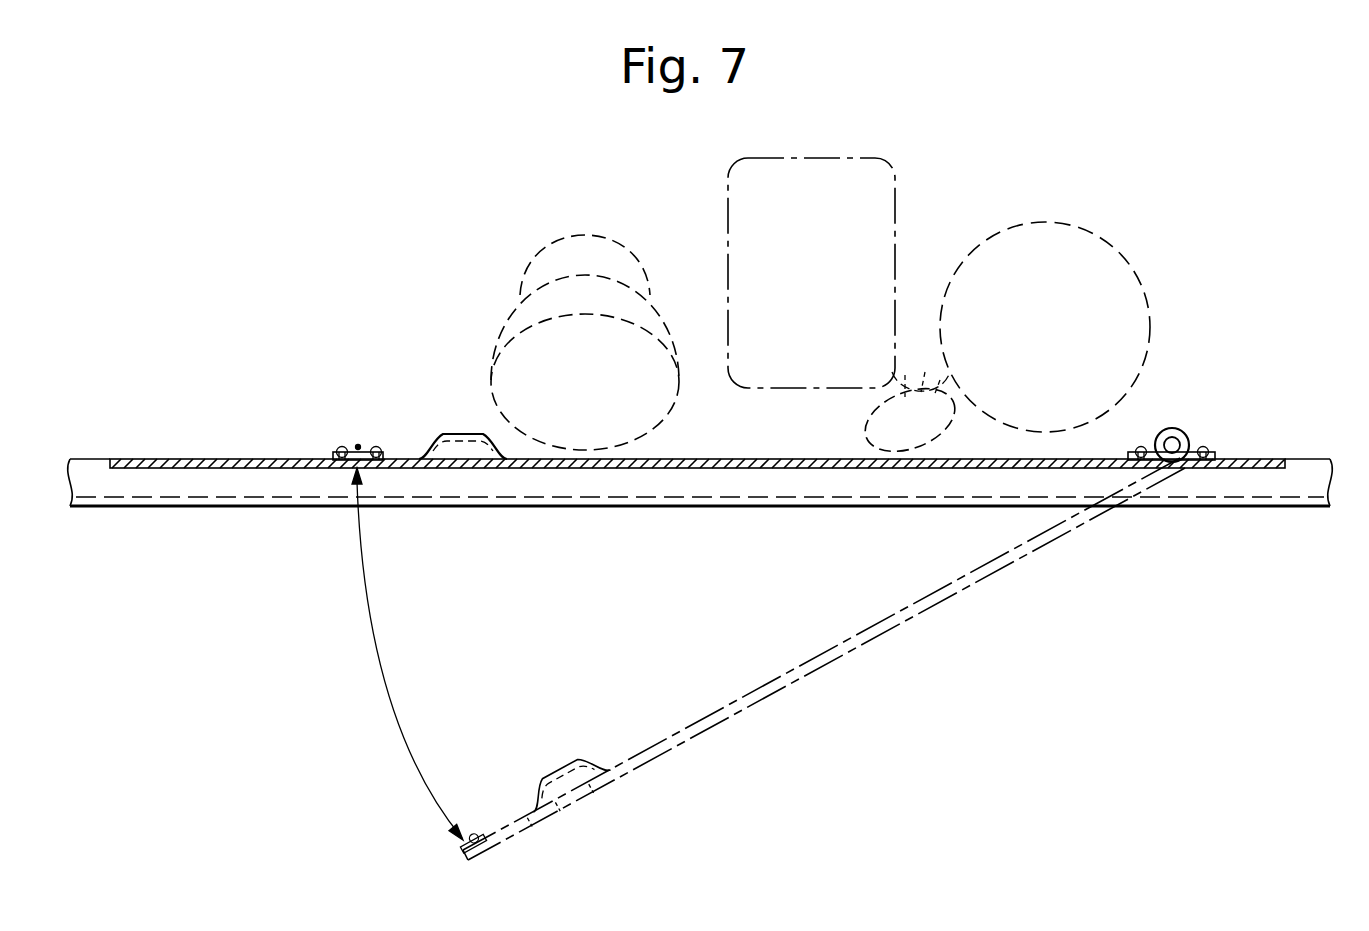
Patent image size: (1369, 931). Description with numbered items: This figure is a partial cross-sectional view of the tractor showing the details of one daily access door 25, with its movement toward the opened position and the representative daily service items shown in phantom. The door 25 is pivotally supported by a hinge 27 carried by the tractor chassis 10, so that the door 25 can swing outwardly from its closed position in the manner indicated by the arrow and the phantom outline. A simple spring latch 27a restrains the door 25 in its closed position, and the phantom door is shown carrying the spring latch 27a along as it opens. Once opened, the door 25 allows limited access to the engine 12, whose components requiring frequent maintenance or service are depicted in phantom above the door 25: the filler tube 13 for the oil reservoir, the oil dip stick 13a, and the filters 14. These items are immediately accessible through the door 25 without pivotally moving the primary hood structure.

The tractor chassis 10 is at (1185, 508).
The engine 12 is at (734, 420).
The filler tube 13 is at (517, 395).
The oil dip stick 13a is at (913, 357).
The filters 14 is at (1160, 347).
The daily access door 25 is at (555, 470).
The hinge 27 is at (1180, 433).
The spring latch 27a is at (358, 447).